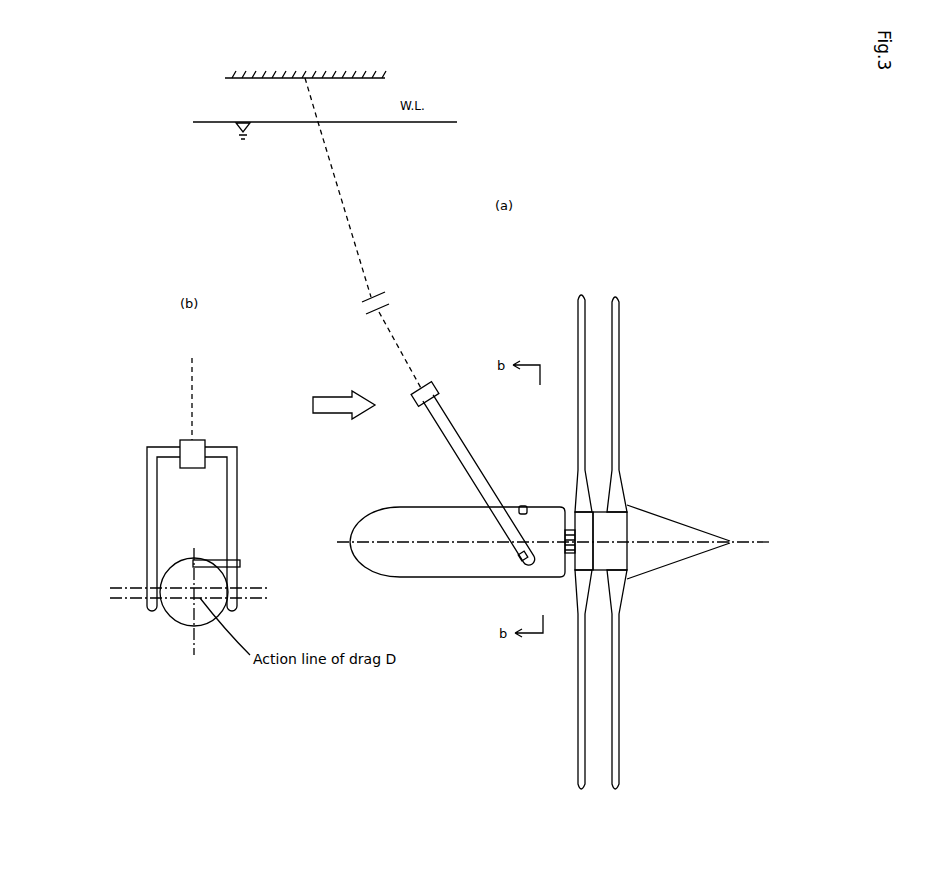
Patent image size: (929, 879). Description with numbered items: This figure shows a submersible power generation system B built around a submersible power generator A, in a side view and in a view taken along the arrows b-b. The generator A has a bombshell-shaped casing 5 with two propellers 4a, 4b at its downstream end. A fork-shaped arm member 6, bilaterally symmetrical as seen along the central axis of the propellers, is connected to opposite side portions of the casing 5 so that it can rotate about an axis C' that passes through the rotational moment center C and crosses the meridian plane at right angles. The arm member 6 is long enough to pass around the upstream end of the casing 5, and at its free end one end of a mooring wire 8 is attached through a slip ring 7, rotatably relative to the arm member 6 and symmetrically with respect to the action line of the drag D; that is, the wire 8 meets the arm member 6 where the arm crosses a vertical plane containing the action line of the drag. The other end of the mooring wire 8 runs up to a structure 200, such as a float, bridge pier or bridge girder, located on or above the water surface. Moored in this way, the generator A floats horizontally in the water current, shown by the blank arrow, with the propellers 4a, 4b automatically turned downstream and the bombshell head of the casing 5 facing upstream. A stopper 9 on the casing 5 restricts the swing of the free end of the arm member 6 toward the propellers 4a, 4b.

The structure 200 is at (358, 57).
The mooring wire 8 is at (366, 238).
The slip ring 7 is at (437, 393).
The fork-shaped arm member 6 is at (472, 463).
The casing 5 is at (410, 508).
The stopper 9 is at (530, 508).
The propeller 4a is at (577, 325).
The propeller 4b is at (621, 325).
The submersible power generator A is at (685, 473).
The submersible power generation system B is at (508, 347).
The rotational moment center C is at (548, 583).
The axis C' is at (277, 615).